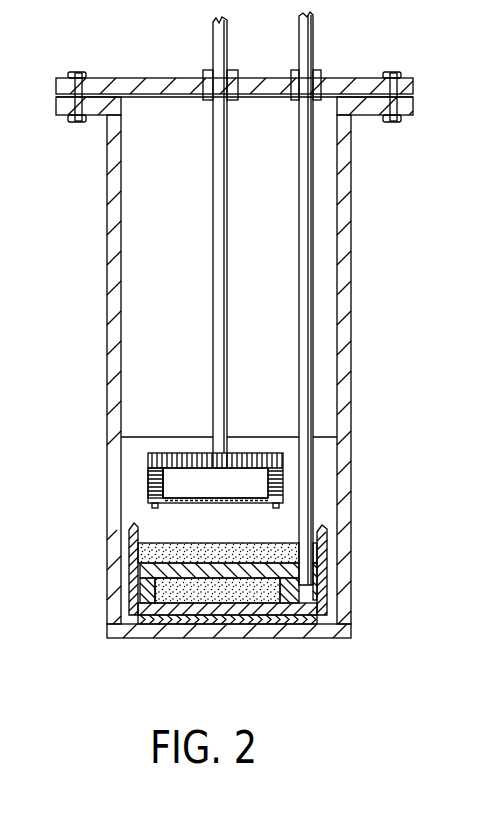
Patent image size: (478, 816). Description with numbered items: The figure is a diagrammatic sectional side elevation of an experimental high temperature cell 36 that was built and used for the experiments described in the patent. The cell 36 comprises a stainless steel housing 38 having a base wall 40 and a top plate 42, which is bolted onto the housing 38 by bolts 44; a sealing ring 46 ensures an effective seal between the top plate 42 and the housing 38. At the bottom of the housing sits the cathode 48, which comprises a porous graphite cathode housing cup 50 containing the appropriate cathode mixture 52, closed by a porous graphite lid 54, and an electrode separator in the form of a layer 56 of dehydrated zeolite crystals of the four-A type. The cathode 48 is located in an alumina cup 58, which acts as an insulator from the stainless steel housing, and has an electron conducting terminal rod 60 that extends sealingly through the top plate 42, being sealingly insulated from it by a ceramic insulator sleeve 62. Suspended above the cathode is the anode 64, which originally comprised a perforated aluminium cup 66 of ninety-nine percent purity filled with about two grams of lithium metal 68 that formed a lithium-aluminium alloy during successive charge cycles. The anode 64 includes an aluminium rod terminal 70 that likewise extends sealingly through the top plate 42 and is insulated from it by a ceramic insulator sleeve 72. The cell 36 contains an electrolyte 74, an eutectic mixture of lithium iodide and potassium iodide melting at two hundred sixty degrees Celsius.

The experimental high temperature cell 36 is at (88, 312).
The stainless steel housing 38 is at (345, 363).
The base wall 40 is at (266, 638).
The top plate 42 is at (158, 78).
The bolts 44 is at (76, 123).
The sealing ring 46 is at (94, 94).
The cathode 48 is at (129, 565).
The porous graphite cathode housing cup 50 is at (136, 615).
The cathode mixture 52 is at (270, 590).
The porous graphite lid 54 is at (290, 568).
The layer of dehydrated zeolite 4A crystals 56 is at (275, 545).
The alumina cup 58 is at (130, 587).
The electron conducting terminal rod 60 is at (305, 266).
The ceramic insulator sleeve 62 is at (322, 78).
The anode 64 is at (182, 452).
The perforated aluminium cup 66 is at (148, 476).
The lithium metal 68 is at (248, 476).
The aluminium rod terminal 70 is at (213, 234).
The ceramic insulator sleeve 72 is at (237, 74).
The electrolyte 74 is at (125, 505).